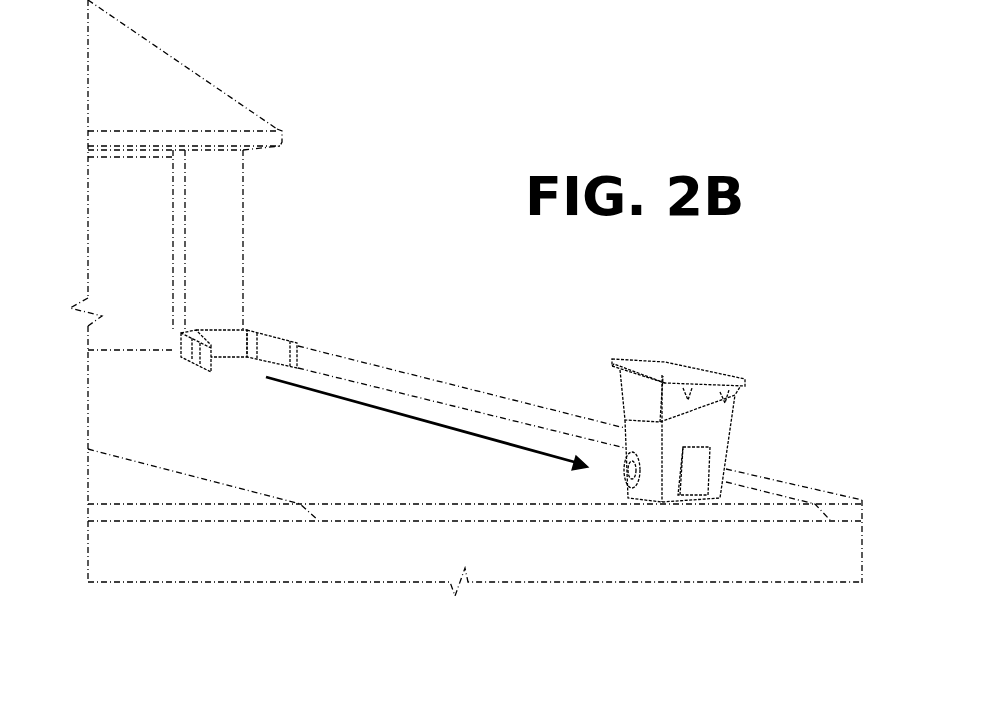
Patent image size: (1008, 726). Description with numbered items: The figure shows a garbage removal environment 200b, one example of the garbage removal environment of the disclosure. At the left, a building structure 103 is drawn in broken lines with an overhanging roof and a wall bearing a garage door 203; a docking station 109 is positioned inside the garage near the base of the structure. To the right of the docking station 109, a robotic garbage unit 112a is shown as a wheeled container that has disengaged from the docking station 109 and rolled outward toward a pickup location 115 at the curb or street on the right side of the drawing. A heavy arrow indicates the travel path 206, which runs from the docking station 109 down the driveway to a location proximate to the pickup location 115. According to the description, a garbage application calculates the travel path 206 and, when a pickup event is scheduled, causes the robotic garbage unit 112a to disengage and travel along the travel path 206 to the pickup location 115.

The house / residence 103 is at (138, 55).
The garage door 203 is at (107, 228).
The docking station 109 is at (256, 331).
The robotic garbage unit 112a is at (718, 368).
The pickup location 115 is at (812, 503).
The travel path 206 is at (373, 408).
The garbage removal environment 200b is at (705, 101).